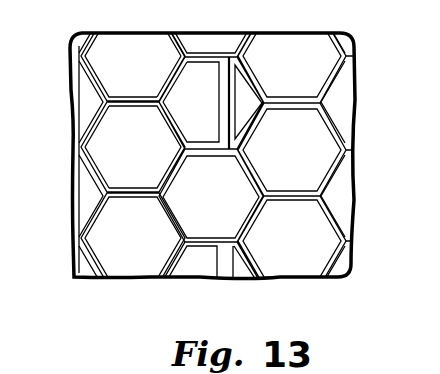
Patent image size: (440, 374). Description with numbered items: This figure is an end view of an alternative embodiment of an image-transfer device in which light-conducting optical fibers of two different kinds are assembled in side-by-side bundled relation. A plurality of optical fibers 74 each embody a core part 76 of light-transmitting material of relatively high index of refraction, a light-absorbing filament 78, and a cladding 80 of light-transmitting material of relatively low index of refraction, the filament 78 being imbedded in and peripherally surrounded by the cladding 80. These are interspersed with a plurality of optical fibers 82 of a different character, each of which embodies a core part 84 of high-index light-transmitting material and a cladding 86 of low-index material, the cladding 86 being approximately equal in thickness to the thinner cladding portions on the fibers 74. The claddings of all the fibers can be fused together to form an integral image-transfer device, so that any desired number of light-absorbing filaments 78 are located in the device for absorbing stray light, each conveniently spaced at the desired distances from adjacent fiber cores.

The optical fiber 74 is at (188, 86).
The core part 76 is at (178, 92).
The light-absorbing filament 78 is at (243, 90).
The cladding 80 is at (170, 90).
The optical fiber 82 is at (280, 53).
The core part 84 is at (97, 145).
The cladding 86 is at (90, 133).